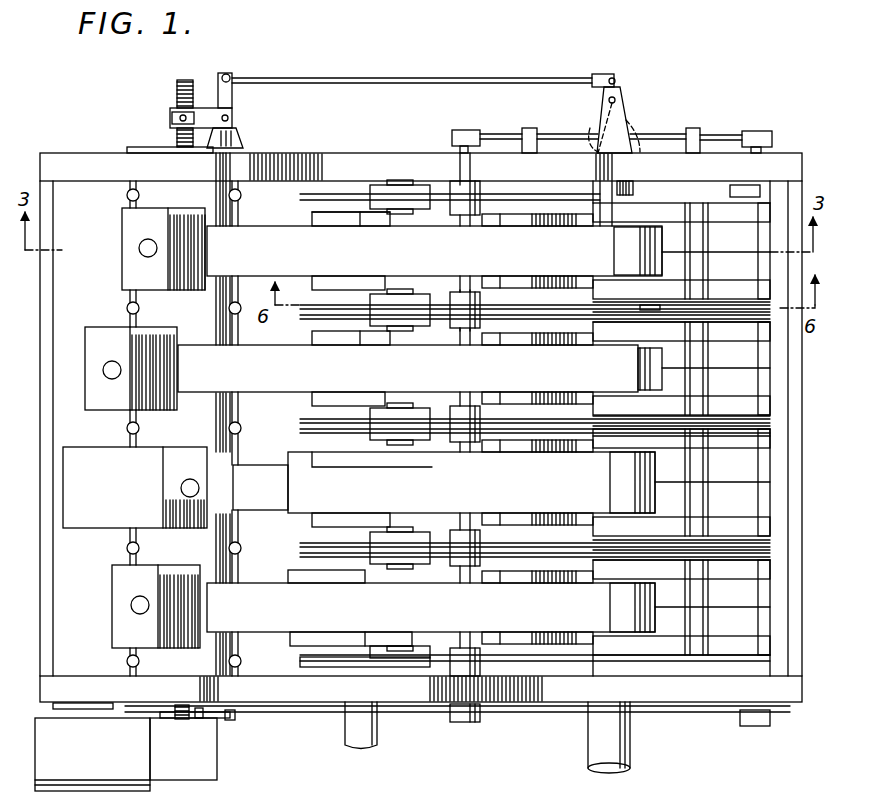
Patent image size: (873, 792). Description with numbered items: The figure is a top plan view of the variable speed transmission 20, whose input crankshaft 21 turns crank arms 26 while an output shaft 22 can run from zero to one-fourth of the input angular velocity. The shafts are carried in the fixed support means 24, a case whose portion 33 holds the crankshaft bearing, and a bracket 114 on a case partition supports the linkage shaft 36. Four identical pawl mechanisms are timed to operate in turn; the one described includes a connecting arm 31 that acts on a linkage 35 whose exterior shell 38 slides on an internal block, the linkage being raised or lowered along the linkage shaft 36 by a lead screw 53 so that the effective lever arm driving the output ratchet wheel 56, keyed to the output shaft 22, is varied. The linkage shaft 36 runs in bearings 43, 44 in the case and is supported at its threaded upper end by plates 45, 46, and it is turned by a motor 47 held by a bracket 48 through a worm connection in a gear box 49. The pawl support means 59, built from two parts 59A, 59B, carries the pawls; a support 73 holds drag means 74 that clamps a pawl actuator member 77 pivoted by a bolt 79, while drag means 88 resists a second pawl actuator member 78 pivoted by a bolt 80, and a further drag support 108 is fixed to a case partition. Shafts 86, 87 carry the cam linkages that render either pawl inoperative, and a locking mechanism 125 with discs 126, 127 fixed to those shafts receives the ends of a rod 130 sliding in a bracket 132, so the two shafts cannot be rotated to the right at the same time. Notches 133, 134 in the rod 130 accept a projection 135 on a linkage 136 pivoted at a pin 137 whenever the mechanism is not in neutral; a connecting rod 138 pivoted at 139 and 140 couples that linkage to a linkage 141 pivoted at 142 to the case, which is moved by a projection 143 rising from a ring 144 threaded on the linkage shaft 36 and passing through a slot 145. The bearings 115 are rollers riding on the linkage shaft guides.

The variable speed transmission 20 is at (680, 728).
The input crankshaft 21 is at (360, 737).
The output shaft 22 is at (608, 186).
The fixed support means 24 is at (337, 154).
The crank arms 26 is at (320, 226).
The connecting arm 31 is at (352, 237).
The portion of case 33 is at (486, 734).
The linkage 35 is at (128, 249).
The linkage shaft 36 is at (178, 82).
The exterior shell 38 is at (128, 228).
The bearing 43 is at (208, 692).
The bearing 44 is at (236, 146).
The plate 45 is at (200, 716).
The plate 46 is at (132, 147).
The motor 47 is at (92, 754).
The bracket 48 is at (83, 716).
The gear box 49 is at (200, 765).
The lead screw 53 is at (144, 257).
The output ratchet wheel 56 is at (520, 220).
The pawl support means 59 is at (665, 268).
The pawl support part 59A is at (681, 212).
The pawl support part 59B is at (681, 289).
The support 73 is at (400, 207).
The drag means 74 is at (385, 195).
The pawl actuator member 77 is at (503, 195).
The pawl actuator member 78 is at (505, 328).
The bolt 79 is at (742, 188).
The bolt 80 is at (698, 322).
The shaft 86 is at (458, 147).
The shaft 87 is at (762, 152).
The drag means 88 is at (418, 326).
The drag means support 108 is at (405, 290).
The bracket 114 is at (130, 187).
The bearing 115 is at (228, 195).
The locking mechanism 125 is at (636, 104).
The disc 126 is at (460, 130).
The disc 127 is at (755, 133).
The rod 130 is at (490, 133).
The bracket 132 is at (698, 145).
The notch 133 is at (598, 130).
The notch 134 is at (643, 176).
The projection 135 is at (652, 138).
The linkage 136 is at (625, 140).
The pin 137 is at (609, 103).
The connecting rod 138 is at (500, 78).
The pivot 139 is at (612, 73).
The pivot 140 is at (230, 74).
The linkage 141 is at (232, 96).
The pivot 142 is at (229, 119).
The projection 143 is at (184, 115).
The ring 144 is at (175, 108).
The slot 145 is at (172, 116).